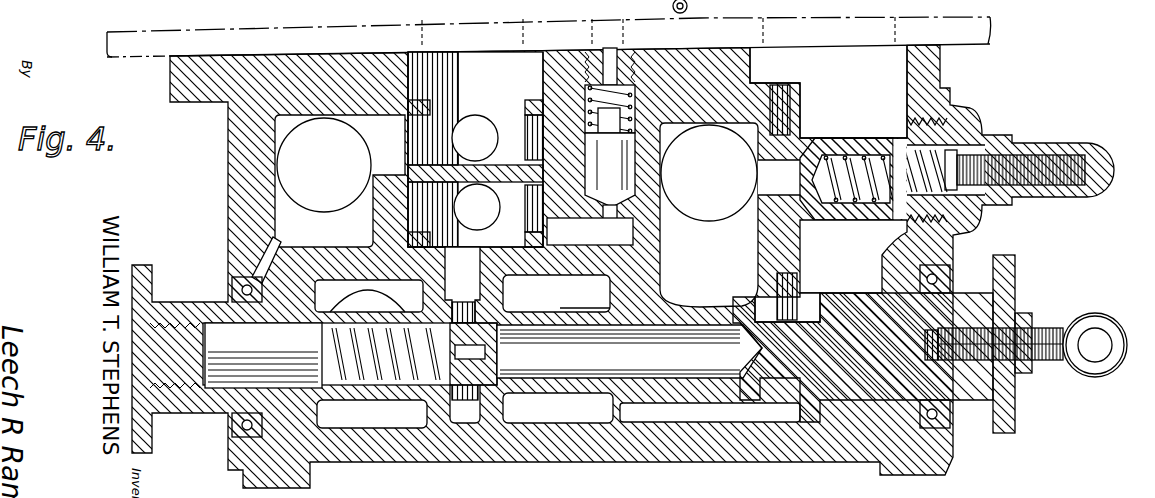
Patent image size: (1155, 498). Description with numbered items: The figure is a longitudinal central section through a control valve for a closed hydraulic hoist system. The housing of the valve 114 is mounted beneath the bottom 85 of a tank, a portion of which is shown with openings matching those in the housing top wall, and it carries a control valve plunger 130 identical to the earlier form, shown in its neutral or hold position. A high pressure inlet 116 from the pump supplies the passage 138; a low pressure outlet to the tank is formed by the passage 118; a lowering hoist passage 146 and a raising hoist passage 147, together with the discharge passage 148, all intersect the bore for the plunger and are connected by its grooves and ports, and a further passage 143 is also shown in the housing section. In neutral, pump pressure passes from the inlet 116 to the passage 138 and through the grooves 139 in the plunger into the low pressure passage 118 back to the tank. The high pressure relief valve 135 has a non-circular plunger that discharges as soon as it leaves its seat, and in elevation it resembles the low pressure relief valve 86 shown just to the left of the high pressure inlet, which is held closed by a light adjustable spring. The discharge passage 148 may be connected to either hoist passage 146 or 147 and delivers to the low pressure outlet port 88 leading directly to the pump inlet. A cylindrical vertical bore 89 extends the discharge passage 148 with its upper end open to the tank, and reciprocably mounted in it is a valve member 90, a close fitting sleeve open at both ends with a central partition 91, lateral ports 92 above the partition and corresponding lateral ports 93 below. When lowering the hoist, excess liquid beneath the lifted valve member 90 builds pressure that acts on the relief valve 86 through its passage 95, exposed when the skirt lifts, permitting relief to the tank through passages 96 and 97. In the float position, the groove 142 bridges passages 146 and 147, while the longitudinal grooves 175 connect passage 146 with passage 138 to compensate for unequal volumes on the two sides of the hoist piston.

The tank bottom 85 is at (938, 24).
The low pressure relief valve 86 is at (627, 157).
The low pressure outlet port 88 is at (325, 128).
The cylindrical vertical bore 89 is at (475, 123).
The flow control valve member 90 is at (475, 216).
The central partition 91 is at (475, 141).
The lateral ports 92 is at (475, 138).
The lateral ports 93 is at (477, 207).
The passage 95 is at (590, 231).
The passage 96 is at (612, 56).
The passage 97 is at (612, 27).
The valve 114 is at (947, 89).
The high pressure inlet 116 is at (709, 173).
The low pressure outlet passage 118 is at (831, 271).
The control valve plunger 130 is at (975, 302).
The high pressure relief valve 135 is at (845, 140).
The passage 138 is at (709, 215).
The grooves 139 is at (810, 385).
The groove 142 is at (347, 300).
The passage 143 is at (651, 408).
The lowering hoist passage 146 is at (556, 293).
The raising hoist passage 147 is at (328, 288).
The discharge passage 148 is at (462, 267).
The longitudinal grooves 175 is at (566, 309).